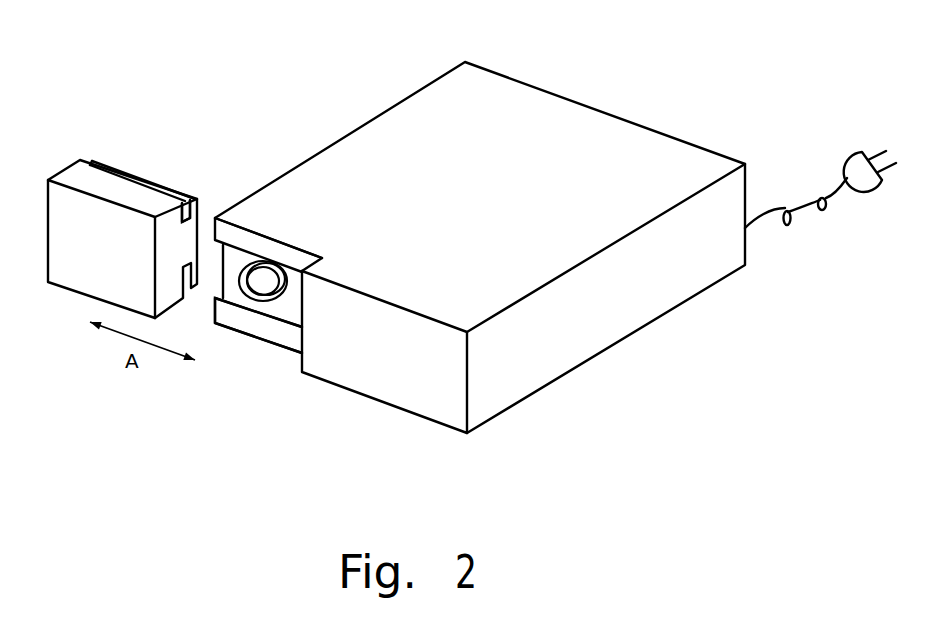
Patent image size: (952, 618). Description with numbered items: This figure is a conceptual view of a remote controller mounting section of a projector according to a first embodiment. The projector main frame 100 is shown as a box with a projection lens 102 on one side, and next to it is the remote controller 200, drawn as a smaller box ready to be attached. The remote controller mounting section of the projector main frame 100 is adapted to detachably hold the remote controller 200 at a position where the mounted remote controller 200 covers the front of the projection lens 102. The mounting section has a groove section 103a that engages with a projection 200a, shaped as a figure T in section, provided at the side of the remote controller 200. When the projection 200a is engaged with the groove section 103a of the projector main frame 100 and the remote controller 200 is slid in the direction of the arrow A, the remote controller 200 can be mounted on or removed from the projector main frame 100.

The projector main frame 100 is at (524, 92).
The projection lens 102 is at (272, 264).
The groove section 103a is at (208, 217).
The remote controller 200 is at (61, 170).
The projection 200a is at (202, 220).